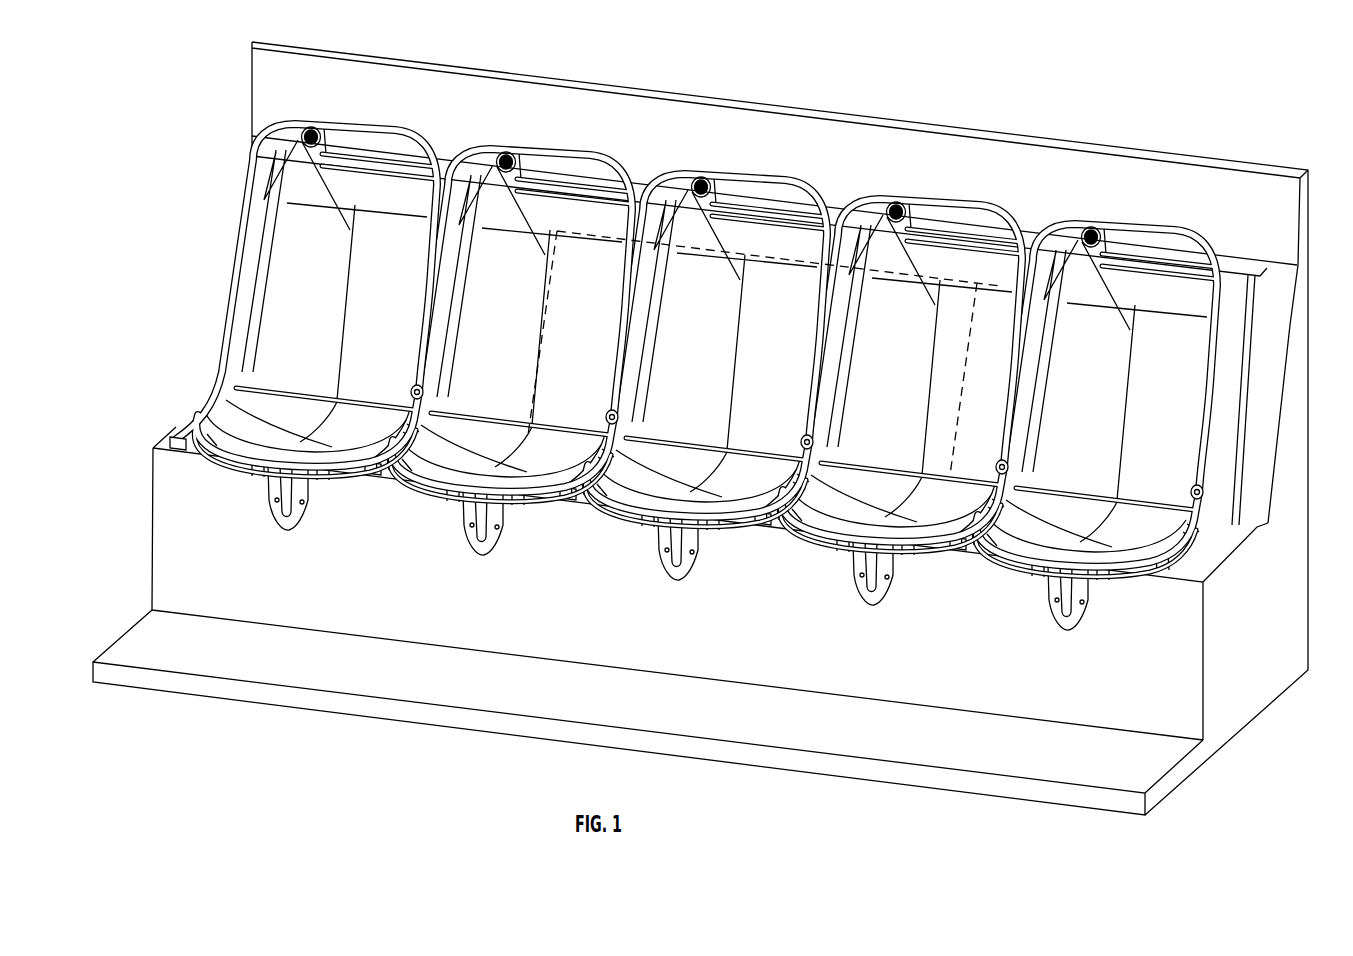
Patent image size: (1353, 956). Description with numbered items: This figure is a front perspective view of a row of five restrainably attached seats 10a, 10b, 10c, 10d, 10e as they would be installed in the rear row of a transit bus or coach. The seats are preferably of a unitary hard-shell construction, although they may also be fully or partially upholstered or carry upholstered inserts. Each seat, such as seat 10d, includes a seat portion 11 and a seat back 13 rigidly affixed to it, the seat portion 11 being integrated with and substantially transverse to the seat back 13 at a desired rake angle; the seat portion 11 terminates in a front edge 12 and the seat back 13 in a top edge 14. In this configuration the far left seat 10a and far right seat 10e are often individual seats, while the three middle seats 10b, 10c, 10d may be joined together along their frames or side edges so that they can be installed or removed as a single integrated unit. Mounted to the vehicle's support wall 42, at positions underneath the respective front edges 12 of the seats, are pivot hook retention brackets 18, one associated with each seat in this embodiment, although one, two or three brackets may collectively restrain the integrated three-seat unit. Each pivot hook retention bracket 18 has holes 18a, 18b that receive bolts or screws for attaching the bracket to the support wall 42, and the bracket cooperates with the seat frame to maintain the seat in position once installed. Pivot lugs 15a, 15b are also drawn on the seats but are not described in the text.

The seat 10a is at (296, 320).
The seat 10b is at (518, 336).
The seat 10c is at (711, 360).
The seat 10d is at (907, 385).
The seat 10e is at (1101, 410).
The seat portion 11 is at (233, 418).
The front edge 12 is at (258, 467).
The seat back 13 is at (406, 197).
The top edge 14 is at (355, 205).
The upper pivot lug 15a is at (299, 141).
The lower pivot lug 15b is at (411, 387).
The pivot hook retention bracket 18 is at (321, 517).
The hole 18a is at (277, 500).
The hole 18b is at (303, 502).
The support wall 42 is at (650, 633).